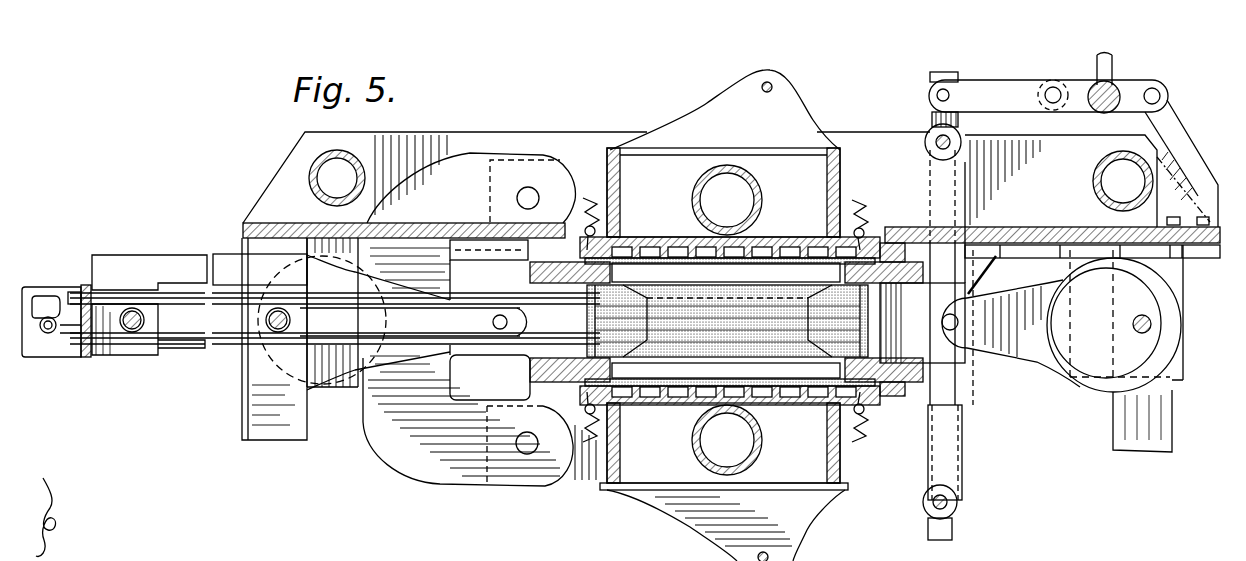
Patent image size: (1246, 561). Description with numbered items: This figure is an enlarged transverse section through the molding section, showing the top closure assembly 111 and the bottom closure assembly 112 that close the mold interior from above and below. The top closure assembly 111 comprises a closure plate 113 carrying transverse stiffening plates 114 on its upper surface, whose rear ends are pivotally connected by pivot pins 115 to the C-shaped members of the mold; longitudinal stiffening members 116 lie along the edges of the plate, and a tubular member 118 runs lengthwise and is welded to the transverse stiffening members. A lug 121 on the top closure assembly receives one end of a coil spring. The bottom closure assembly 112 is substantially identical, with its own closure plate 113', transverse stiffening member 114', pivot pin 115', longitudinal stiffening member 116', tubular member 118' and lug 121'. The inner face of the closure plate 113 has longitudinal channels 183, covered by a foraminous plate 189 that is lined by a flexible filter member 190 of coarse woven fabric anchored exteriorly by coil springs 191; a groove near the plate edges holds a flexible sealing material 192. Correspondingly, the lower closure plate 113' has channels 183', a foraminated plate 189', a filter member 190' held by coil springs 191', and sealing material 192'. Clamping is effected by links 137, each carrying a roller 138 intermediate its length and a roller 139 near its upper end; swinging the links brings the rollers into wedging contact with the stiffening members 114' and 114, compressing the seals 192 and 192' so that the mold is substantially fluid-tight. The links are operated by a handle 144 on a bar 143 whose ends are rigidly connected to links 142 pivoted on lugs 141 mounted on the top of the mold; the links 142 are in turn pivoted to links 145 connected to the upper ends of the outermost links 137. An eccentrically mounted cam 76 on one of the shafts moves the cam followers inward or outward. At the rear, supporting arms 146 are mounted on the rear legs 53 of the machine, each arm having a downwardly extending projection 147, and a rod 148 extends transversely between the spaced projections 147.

The rear legs 53 is at (250, 412).
The eccentrically mounted cam 76 is at (1087, 358).
The top closure assembly 111 is at (815, 127).
The bottom closure assembly 112 is at (812, 512).
The closure plate 113 is at (1047, 227).
The lower closure plate 113' is at (904, 391).
The transverse stiffening plate 114 is at (940, 244).
The lower transverse stiffening member 114' is at (921, 475).
The pivot pin 115 is at (537, 152).
The lower pivot pin 115' is at (534, 473).
The longitudinal stiffening member 116 is at (723, 192).
The lower longitudinal stiffening member 116' is at (724, 446).
The tubular member 118 is at (748, 200).
The lower tubular member 118' is at (749, 440).
The lug 121 is at (725, 110).
The lower lug 121' is at (726, 525).
The link 137 is at (960, 118).
The roller 138 is at (958, 506).
The roller 139 is at (963, 143).
The lug 141 is at (1190, 145).
The link 142 is at (1117, 96).
The bar 143 is at (1108, 110).
The handle 144 is at (1096, 68).
The link 145 is at (989, 92).
The supporting arm 146 is at (180, 255).
The downwardly extending projection 147 is at (145, 358).
The rod 148 is at (132, 332).
The longitudinal channel 183 is at (734, 233).
The lower longitudinal channel 183' is at (730, 416).
The foraminous plate 189 is at (730, 237).
The lower foraminated plate 189' is at (727, 338).
The flexible filter member 190 is at (905, 312).
The lower filter member 190' is at (725, 377).
The coil spring 191 is at (749, 211).
The lower coil spring 191' is at (753, 421).
The sealing material 192 is at (530, 270).
The lower sealing material 192' is at (495, 372).